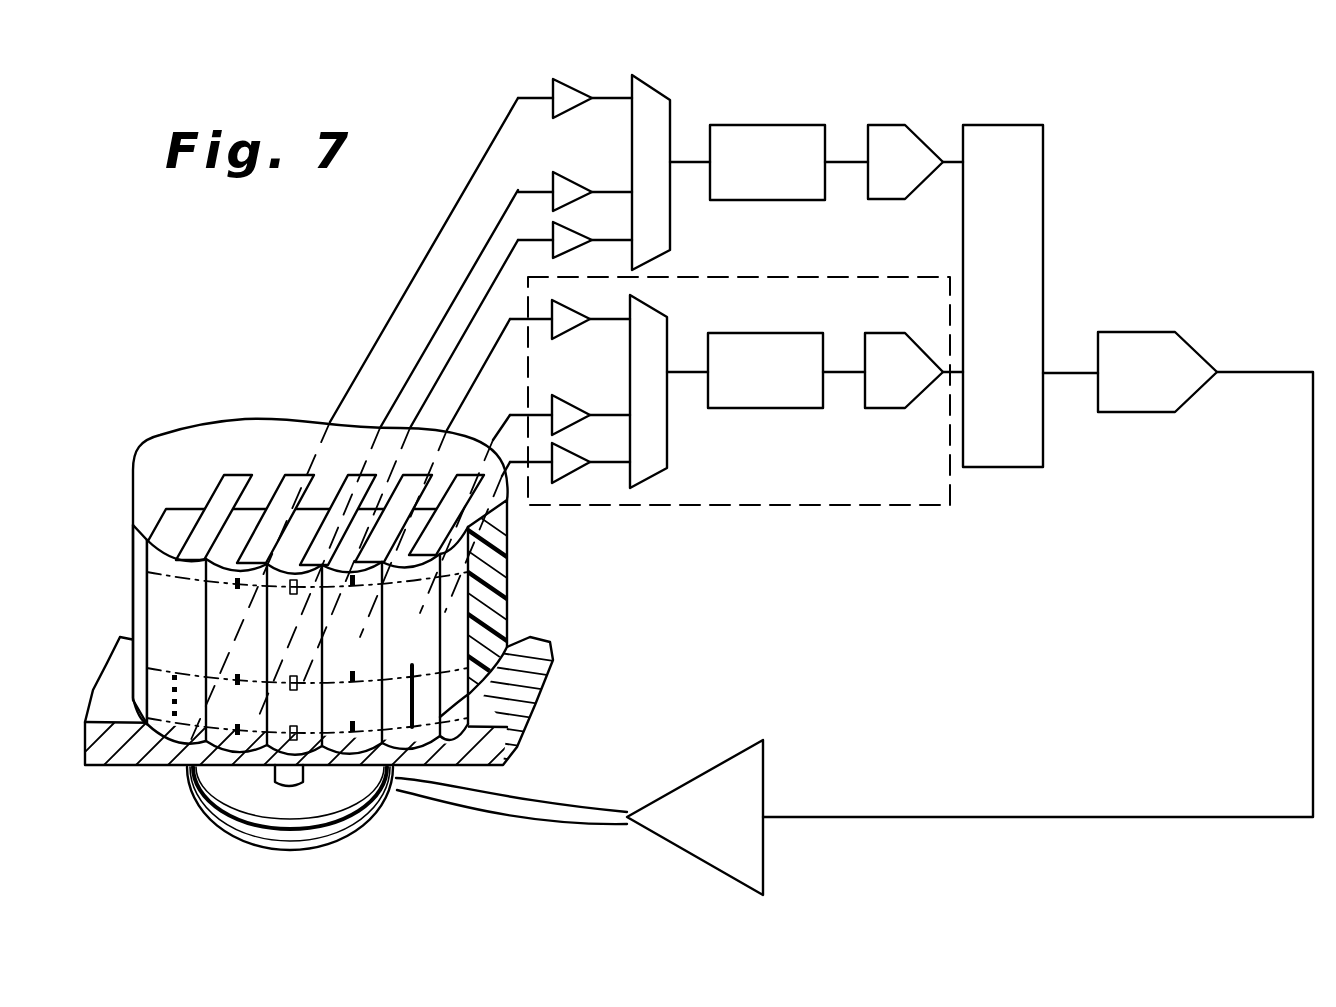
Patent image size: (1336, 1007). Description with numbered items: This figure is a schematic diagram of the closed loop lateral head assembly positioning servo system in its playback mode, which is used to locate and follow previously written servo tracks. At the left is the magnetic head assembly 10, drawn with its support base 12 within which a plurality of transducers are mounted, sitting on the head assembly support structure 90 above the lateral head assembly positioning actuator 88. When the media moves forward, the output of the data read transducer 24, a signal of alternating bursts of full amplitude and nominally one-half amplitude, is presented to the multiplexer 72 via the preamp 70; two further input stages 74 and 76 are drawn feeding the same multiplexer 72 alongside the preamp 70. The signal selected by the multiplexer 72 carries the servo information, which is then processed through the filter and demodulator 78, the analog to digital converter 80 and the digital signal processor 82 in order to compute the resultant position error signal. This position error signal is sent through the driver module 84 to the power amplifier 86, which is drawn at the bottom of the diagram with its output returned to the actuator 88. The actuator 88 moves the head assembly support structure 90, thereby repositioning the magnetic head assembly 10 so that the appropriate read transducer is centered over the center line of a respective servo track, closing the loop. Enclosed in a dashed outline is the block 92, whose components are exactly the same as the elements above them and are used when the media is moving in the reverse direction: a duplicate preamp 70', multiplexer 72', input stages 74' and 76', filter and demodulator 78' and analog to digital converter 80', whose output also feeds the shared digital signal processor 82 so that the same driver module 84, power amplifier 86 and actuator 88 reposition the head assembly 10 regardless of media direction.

The head assembly 10 is at (150, 428).
The support base 12 is at (256, 424).
The data read transducer 24 is at (190, 742).
The preamp 70 is at (586, 231).
The multiplexer 72 is at (673, 164).
The amplifier 74 is at (586, 179).
The amplifier 76 is at (583, 86).
The filter and demodulator 78 is at (777, 141).
The analog to digital converter 80 is at (913, 146).
The digital signal processor 82 is at (1045, 153).
The driver module 84 is at (1185, 345).
The power amplifier 86 is at (718, 758).
The lateral head assembly positioning actuator 88 is at (360, 828).
The head assembly support structure 90 is at (103, 755).
The block 92 is at (815, 507).
The amplifier (second channel) 70' is at (588, 455).
The multiplexer (second channel) 72' is at (682, 391).
The amplifier (second channel) 74' is at (588, 401).
The amplifier (second channel) 76' is at (586, 311).
The signal processor (second channel) 78' is at (765, 399).
The comparator (second channel) 80' is at (901, 399).